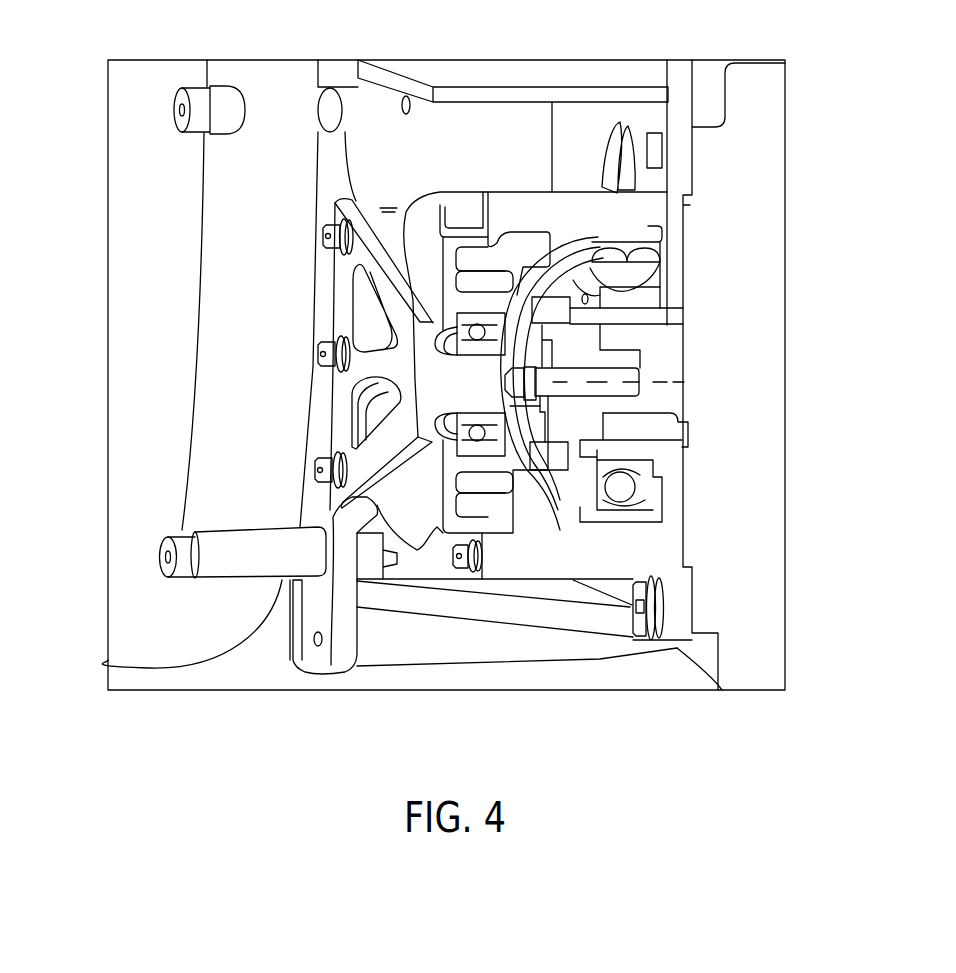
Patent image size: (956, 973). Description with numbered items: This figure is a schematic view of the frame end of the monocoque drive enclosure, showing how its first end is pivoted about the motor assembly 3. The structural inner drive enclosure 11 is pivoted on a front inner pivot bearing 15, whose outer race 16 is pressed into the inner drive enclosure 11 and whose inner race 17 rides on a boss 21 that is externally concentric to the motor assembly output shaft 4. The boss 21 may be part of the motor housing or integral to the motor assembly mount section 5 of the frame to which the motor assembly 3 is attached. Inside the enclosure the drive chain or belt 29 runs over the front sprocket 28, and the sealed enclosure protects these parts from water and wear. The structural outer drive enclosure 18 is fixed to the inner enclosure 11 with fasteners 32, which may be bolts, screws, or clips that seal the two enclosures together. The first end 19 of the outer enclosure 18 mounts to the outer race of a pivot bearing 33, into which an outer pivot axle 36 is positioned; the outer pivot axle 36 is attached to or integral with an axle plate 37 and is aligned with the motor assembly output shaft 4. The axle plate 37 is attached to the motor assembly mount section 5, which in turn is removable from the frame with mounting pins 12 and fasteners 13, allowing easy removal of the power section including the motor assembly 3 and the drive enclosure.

The motor assembly 3 is at (722, 690).
The motor assembly output shaft 4 is at (623, 358).
The motor assembly mount section 5 is at (403, 655).
The structural inner drive enclosure 11 is at (605, 207).
The mounting pins 12 is at (175, 112).
The fasteners 13 is at (635, 125).
The front inner pivot bearing 15 is at (612, 243).
The outer race 16 is at (655, 232).
The inner race 17 is at (640, 297).
The structural outer drive enclosure 18 is at (426, 264).
The first end of the outer enclosure 19 is at (410, 213).
The boss 21 is at (617, 317).
The front sprocket 28 is at (560, 432).
The drive chain or belt 29 is at (557, 527).
The fasteners 32 is at (475, 573).
The pivot bearing 33 is at (467, 435).
The outer pivot axle 36 is at (467, 387).
The axle plate 37 is at (342, 298).